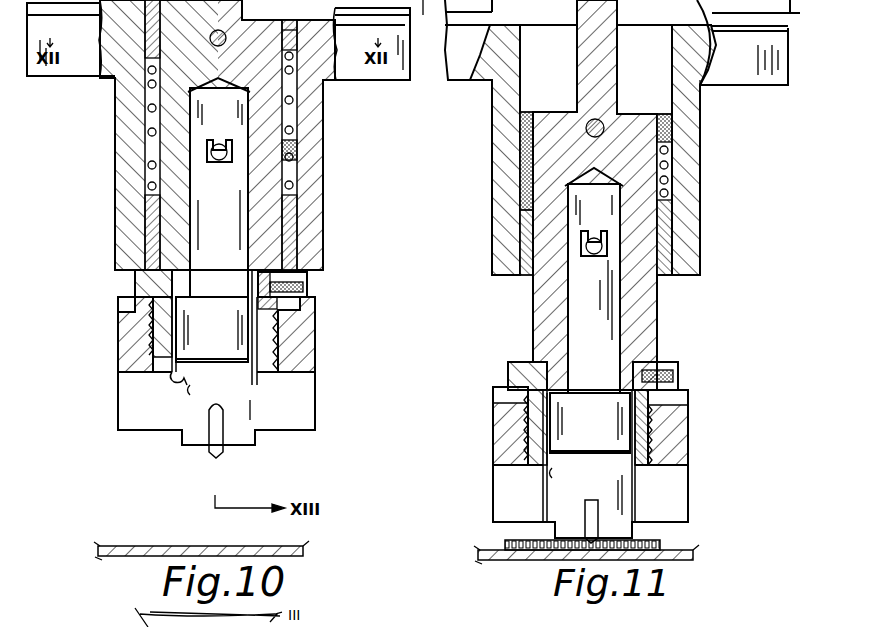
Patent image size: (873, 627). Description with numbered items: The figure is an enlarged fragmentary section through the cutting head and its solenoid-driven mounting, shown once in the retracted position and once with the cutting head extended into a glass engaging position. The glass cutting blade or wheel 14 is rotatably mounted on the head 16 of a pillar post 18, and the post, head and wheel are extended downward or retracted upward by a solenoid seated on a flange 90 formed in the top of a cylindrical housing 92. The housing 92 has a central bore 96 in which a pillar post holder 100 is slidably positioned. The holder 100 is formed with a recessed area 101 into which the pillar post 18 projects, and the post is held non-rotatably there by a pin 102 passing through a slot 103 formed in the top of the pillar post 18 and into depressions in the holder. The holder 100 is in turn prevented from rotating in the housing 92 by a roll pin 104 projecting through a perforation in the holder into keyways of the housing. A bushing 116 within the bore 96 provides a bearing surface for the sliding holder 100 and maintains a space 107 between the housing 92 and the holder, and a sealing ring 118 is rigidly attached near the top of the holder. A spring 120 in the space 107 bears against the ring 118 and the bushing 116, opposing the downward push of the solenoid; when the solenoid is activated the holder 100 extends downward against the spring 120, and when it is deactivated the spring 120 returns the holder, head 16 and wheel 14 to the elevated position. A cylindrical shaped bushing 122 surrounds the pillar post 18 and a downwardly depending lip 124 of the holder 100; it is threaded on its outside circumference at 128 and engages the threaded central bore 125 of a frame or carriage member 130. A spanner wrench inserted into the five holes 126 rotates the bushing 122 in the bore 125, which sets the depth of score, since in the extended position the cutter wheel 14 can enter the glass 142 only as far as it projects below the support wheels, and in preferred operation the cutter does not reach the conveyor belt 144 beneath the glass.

In FIG. 10, the glass cutting blade or wheel 14 is at (215, 455).
In FIG. 11, the glass cutting blade or wheel 14 is at (590, 530).
In FIG. 10, the head 16 is at (245, 428).
In FIG. 11, the head 16 is at (630, 497).
In FIG. 10, the pillar post 18 is at (210, 256).
In FIG. 11, the pillar post 18 is at (580, 328).
In FIG. 10, the flange 90 is at (398, 82).
In FIG. 11, the flange 90 is at (752, 88).
In FIG. 10, the cylindrical housing 92 is at (125, 182).
In FIG. 11, the cylindrical housing 92 is at (500, 180).
In FIG. 10, the central bore 96 is at (300, 180).
In FIG. 11, the central bore 96 is at (668, 190).
In FIG. 10, the pillar post holder 100 is at (165, 218).
In FIG. 11, the pillar post holder 100 is at (655, 312).
In FIG. 10, the recessed area 101 is at (250, 125).
In FIG. 11, the recessed area 101 is at (622, 214).
In FIG. 10, the pin 102 is at (228, 146).
In FIG. 11, the pin 102 is at (588, 230).
In FIG. 10, the slot 103 is at (213, 154).
In FIG. 11, the slot 103 is at (585, 243).
In FIG. 10, the roll pin 104 is at (227, 32).
In FIG. 11, the roll pin 104 is at (612, 112).
In FIG. 10, the space 107 is at (300, 92).
In FIG. 10, the bushing 116 is at (285, 236).
In FIG. 11, the bushing 116 is at (664, 194).
In FIG. 11, the sealing ring 118 is at (702, 128).
In FIG. 10, the spring 120 is at (290, 142).
In FIG. 11, the spring 120 is at (523, 158).
In FIG. 10, the cylindrical shaped bushing 122 is at (145, 286).
In FIG. 11, the cylindrical shaped bushing 122 is at (508, 374).
In FIG. 10, the downwardly depending lip 124 is at (180, 302).
In FIG. 11, the downwardly depending lip 124 is at (553, 384).
In FIG. 10, the central bore 125 is at (152, 341).
In FIG. 11, the central bore 125 is at (527, 430).
In FIG. 10, the holes 126 is at (298, 288).
In FIG. 11, the holes 126 is at (678, 374).
In FIG. 10, the threads 128 is at (285, 358).
In FIG. 11, the threads 128 is at (660, 444).
In FIG. 10, the frame or carriage member 130 is at (312, 336).
In FIG. 11, the frame or carriage member 130 is at (690, 420).
In FIG. 11, the glass 142 is at (510, 540).
In FIG. 10, the conveyor belt 144 is at (118, 546).
In FIG. 11, the conveyor belt 144 is at (695, 552).